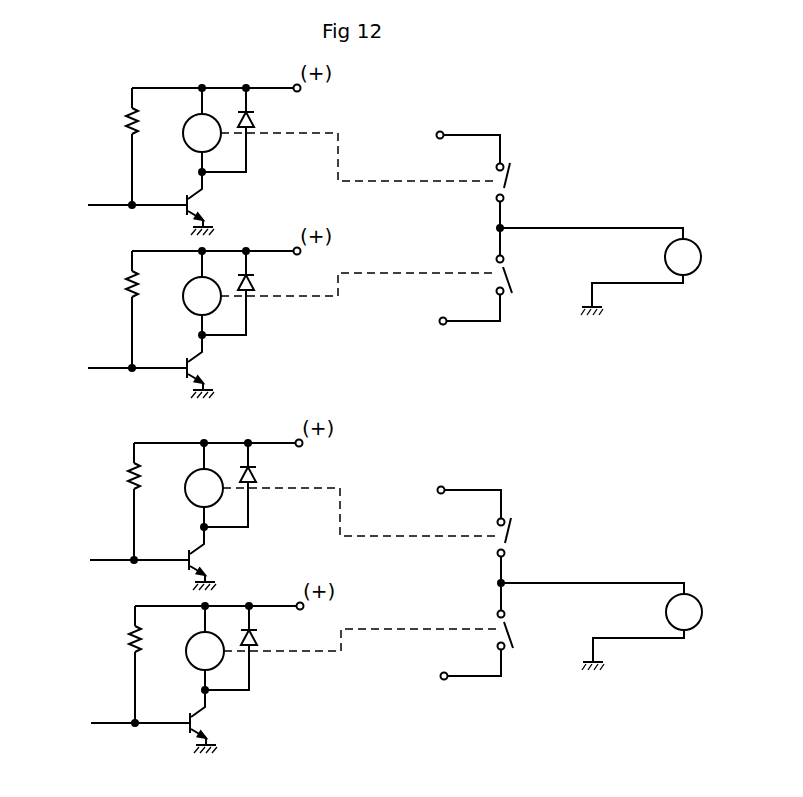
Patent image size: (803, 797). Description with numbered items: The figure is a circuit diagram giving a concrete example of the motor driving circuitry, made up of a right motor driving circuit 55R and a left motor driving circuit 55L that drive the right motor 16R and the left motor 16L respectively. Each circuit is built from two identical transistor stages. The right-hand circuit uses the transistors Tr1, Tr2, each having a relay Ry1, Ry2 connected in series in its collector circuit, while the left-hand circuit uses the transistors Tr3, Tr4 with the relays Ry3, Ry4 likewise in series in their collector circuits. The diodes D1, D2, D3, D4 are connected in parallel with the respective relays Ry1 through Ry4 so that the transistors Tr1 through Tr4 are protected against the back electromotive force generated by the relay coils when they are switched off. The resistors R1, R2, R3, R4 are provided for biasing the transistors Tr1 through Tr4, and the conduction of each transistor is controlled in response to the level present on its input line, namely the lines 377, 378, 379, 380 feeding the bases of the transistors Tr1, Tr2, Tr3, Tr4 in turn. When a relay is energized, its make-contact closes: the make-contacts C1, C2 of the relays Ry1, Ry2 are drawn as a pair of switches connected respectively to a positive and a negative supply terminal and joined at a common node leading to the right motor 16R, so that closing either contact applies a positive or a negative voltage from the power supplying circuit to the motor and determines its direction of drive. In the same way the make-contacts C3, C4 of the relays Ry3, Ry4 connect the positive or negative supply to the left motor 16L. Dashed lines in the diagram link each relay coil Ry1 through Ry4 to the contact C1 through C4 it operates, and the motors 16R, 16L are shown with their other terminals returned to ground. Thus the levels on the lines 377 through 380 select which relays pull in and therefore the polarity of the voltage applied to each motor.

The line 377 is at (112, 208).
The line 378 is at (110, 372).
The line 379 is at (113, 564).
The line 380 is at (121, 732).
The resistor R1 is at (130, 127).
The resistor R2 is at (128, 284).
The resistor R3 is at (132, 480).
The resistor R4 is at (133, 646).
The relay Ry1 is at (184, 134).
The relay Ry2 is at (184, 297).
The relay Ry3 is at (186, 489).
The relay Ry4 is at (188, 659).
The diode D1 is at (256, 116).
The diode D2 is at (256, 279).
The diode D3 is at (258, 471).
The diode D4 is at (259, 634).
The transistor Tr1 is at (203, 203).
The transistor Tr2 is at (203, 366).
The transistor Tr3 is at (205, 558).
The transistor Tr4 is at (206, 721).
The make-contact C1 is at (514, 178).
The make-contact C2 is at (513, 281).
The make-contact C3 is at (513, 537).
The make-contact C4 is at (514, 636).
The motor driving circuit 55R is at (510, 89).
The motor driving circuit 55L is at (463, 446).
The right motor 16R is at (703, 262).
The left motor 16L is at (704, 617).